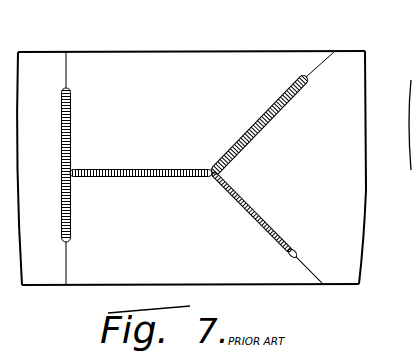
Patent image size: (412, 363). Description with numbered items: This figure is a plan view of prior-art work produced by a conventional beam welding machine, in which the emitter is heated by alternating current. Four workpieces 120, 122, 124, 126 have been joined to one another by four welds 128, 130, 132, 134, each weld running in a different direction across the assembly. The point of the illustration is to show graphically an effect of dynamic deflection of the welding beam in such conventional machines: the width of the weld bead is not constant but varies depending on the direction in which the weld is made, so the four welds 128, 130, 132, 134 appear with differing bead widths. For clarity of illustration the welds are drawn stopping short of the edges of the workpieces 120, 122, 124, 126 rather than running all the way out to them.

The workpiece 120 is at (45, 275).
The workpiece 122 is at (166, 57).
The workpiece 124 is at (347, 212).
The workpiece 126 is at (268, 270).
The weld 128 is at (70, 140).
The weld 130 is at (123, 177).
The weld 132 is at (248, 134).
The weld 134 is at (256, 212).